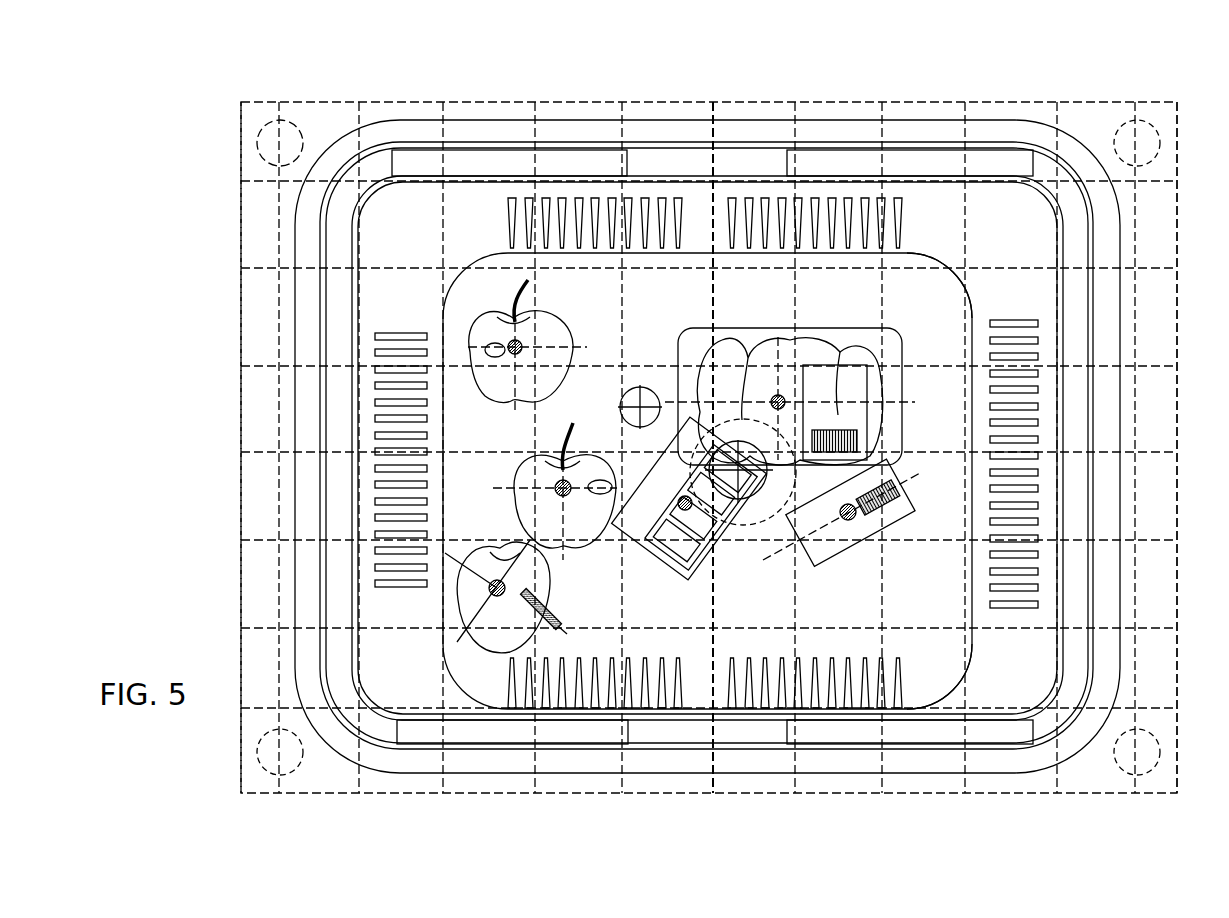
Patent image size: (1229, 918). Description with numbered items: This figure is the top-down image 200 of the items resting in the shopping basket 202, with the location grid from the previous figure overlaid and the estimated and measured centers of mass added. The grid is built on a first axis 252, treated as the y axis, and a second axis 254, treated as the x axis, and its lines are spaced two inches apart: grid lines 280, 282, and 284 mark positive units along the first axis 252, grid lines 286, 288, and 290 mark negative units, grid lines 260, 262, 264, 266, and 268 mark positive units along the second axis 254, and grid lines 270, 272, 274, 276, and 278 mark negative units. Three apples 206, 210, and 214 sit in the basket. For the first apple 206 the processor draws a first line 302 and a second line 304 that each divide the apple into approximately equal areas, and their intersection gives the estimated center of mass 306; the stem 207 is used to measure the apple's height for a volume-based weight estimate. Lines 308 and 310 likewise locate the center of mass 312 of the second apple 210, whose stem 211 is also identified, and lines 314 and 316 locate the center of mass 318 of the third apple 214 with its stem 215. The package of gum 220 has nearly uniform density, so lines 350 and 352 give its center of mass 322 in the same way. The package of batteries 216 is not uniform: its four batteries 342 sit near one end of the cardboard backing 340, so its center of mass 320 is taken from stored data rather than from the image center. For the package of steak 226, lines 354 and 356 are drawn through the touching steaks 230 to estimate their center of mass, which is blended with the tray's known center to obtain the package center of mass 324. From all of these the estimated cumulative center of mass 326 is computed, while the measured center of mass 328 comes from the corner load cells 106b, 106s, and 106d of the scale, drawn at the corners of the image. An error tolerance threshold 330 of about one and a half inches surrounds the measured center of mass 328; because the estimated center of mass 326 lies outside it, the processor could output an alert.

The image 200 is at (1138, 92).
The shopping basket 202 is at (752, 130).
The load cell 106b is at (300, 128).
The corner mounting post 106s is at (1114, 140).
The load cell 106d is at (1115, 760).
The grid line 278 is at (279, 199).
The grid line 266 is at (1053, 190).
The grid line 260 is at (798, 193).
The grid line 276 is at (358, 190).
The grid line 272 is at (535, 165).
The grid line 270 is at (627, 160).
The first axis 252 is at (720, 170).
The grid line 262 is at (884, 193).
The grid line 284 is at (943, 190).
The grid line 290 is at (910, 706).
The grid line 274 is at (445, 240).
The grid line 282 is at (903, 267).
The grid line 288 is at (940, 627).
The grid line 264 is at (965, 247).
The grid line 268 is at (1137, 305).
The second axis 254 is at (937, 452).
The grid line 286 is at (953, 540).
The first apple 206 is at (553, 318).
The stem 207 is at (545, 300).
The second line 304 is at (515, 290).
The first line 302 is at (573, 342).
The center of mass 306 is at (508, 343).
The second apple 210 is at (590, 540).
The stem 211 is at (575, 432).
The line 310 is at (560, 425).
The line 308 is at (497, 488).
The center of mass 312 is at (570, 492).
The third apple 214 is at (503, 635).
The stem 215 is at (555, 630).
The line 316 is at (498, 548).
The center of mass 318 is at (505, 586).
The line 314 is at (565, 630).
The estimated cumulative center of mass 326 is at (640, 388).
The center of mass 320 is at (660, 470).
The package of batteries 216 is at (665, 563).
The batteries 342 is at (637, 533).
The cardboard backing 340 is at (683, 570).
The measured center of mass 328 is at (753, 503).
The error tolerance threshold 330 is at (727, 408).
The package of steak 226 is at (900, 320).
The line 356 is at (780, 330).
The steaks 230 is at (746, 343).
The center of mass 324 is at (775, 398).
The line 354 is at (912, 402).
The grid line 280 is at (913, 360).
The package of gum 220 is at (817, 573).
The line 350 is at (905, 548).
The center of mass 322 is at (850, 527).
The line 352 is at (918, 472).